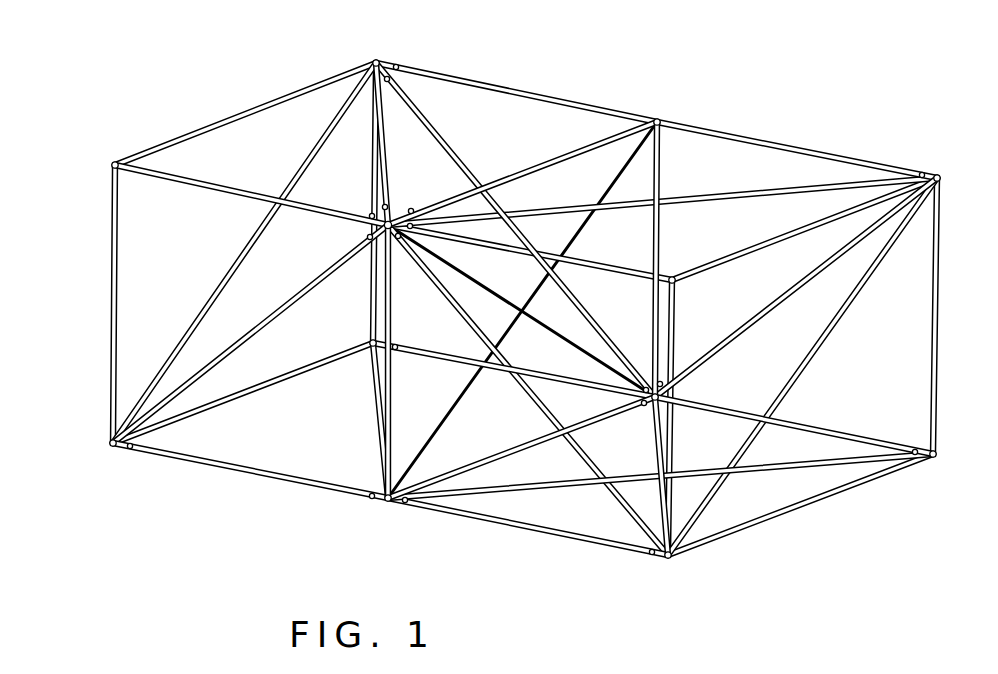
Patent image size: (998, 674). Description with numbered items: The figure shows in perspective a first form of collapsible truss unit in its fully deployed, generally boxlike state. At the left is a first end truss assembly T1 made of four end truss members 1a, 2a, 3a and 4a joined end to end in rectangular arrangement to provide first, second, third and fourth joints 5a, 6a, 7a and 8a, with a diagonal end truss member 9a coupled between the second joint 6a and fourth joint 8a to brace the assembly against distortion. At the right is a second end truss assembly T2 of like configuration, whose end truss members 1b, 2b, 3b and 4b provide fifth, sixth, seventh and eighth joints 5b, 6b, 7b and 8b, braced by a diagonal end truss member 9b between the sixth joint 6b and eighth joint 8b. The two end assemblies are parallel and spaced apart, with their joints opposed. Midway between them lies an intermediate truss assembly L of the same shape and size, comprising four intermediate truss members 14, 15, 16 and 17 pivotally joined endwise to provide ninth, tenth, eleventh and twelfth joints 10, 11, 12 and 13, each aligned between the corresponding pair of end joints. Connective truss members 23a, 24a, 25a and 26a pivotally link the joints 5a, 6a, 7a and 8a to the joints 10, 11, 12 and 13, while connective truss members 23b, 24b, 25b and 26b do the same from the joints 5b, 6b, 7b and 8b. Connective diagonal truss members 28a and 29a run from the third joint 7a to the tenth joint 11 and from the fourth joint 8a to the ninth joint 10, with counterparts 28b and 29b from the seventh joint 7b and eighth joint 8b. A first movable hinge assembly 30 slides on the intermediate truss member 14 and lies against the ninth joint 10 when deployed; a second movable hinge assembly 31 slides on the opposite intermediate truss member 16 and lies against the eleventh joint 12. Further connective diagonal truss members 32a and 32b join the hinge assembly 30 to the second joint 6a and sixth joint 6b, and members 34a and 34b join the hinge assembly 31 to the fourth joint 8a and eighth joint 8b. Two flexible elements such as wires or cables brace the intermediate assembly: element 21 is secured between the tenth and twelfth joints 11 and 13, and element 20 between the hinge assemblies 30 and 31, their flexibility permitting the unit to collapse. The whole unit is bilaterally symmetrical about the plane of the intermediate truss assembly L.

The end truss member 1a is at (110, 316).
The end truss member 1b is at (673, 442).
The end truss member 2a is at (215, 410).
The end truss member 2b is at (805, 506).
The end truss member 3a is at (371, 174).
The end truss member 3b is at (942, 358).
The end truss member 4a is at (300, 88).
The end truss member 4b is at (792, 234).
The first joint 5a is at (108, 165).
The fifth joint 5b is at (675, 272).
The second joint 6a is at (108, 443).
The sixth joint 6b is at (668, 565).
The third joint 7a is at (366, 352).
The seventh joint 7b is at (945, 454).
The fourth joint 8a is at (376, 57).
The eighth joint 8b is at (942, 178).
The diagonal end truss member 9a is at (245, 252).
The diagonal end truss member 9b is at (850, 305).
The ninth joint 10 is at (398, 213).
The tenth joint 11 is at (388, 508).
The eleventh joint 12 is at (652, 405).
The twelfth joint 13 is at (657, 115).
The intermediate truss member 14 is at (389, 308).
The intermediate truss member 15 is at (515, 447).
The intermediate truss member 16 is at (659, 170).
The intermediate truss member 17 is at (530, 165).
The flexible element 20 is at (455, 265).
The flexible element 21 is at (612, 180).
The first connective truss member 23a is at (262, 190).
The fifth connective truss member 23b is at (625, 246).
The second connective truss member 24a is at (243, 475).
The sixth connective truss member 24b is at (510, 528).
The third connective truss member 25a is at (443, 362).
The seventh connective truss member 25b is at (850, 436).
The fourth connective truss member 26a is at (525, 93).
The eighth connective truss member 26b is at (765, 142).
The first connective diagonal truss member 28a is at (372, 410).
The third connective diagonal truss member 28b is at (530, 487).
The second connective diagonal truss member 29a is at (392, 192).
The fourth connective diagonal truss member 29b is at (713, 192).
The first movable hinge assembly 30 is at (375, 228).
The second movable hinge assembly 31 is at (650, 375).
The fifth connective diagonal truss member 32a is at (258, 330).
The sixth connective diagonal truss member 32b is at (589, 450).
The seventh connective diagonal truss member 34a is at (437, 135).
The eighth connective diagonal truss member 34b is at (735, 340).
The first end truss assembly T1 is at (210, 120).
The second end truss assembly T2 is at (941, 290).
The intermediate truss assembly L is at (578, 153).